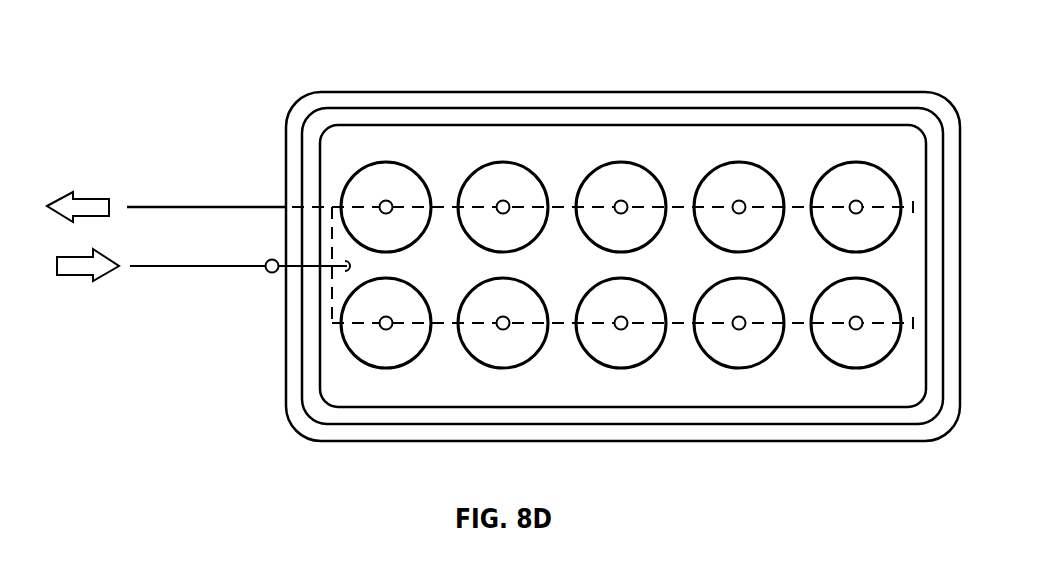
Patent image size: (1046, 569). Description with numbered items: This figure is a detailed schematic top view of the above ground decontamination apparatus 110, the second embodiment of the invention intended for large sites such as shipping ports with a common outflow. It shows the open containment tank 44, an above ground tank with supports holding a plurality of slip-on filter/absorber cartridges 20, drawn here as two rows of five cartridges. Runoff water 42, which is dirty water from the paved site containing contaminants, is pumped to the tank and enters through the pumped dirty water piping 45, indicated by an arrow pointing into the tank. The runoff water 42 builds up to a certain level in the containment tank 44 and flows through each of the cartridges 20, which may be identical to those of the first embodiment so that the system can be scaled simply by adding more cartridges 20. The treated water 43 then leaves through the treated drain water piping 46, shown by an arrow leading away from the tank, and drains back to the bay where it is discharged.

The slip-on filter/absorber cartridge 20 is at (850, 163).
The runoff water 42 is at (888, 395).
The treated water 43 is at (70, 200).
The containment tank 44 is at (812, 442).
The pumped dirty water piping 45 is at (200, 270).
The treated drain water piping 46 is at (195, 205).
The above ground decontamination apparatus 110 is at (622, 50).